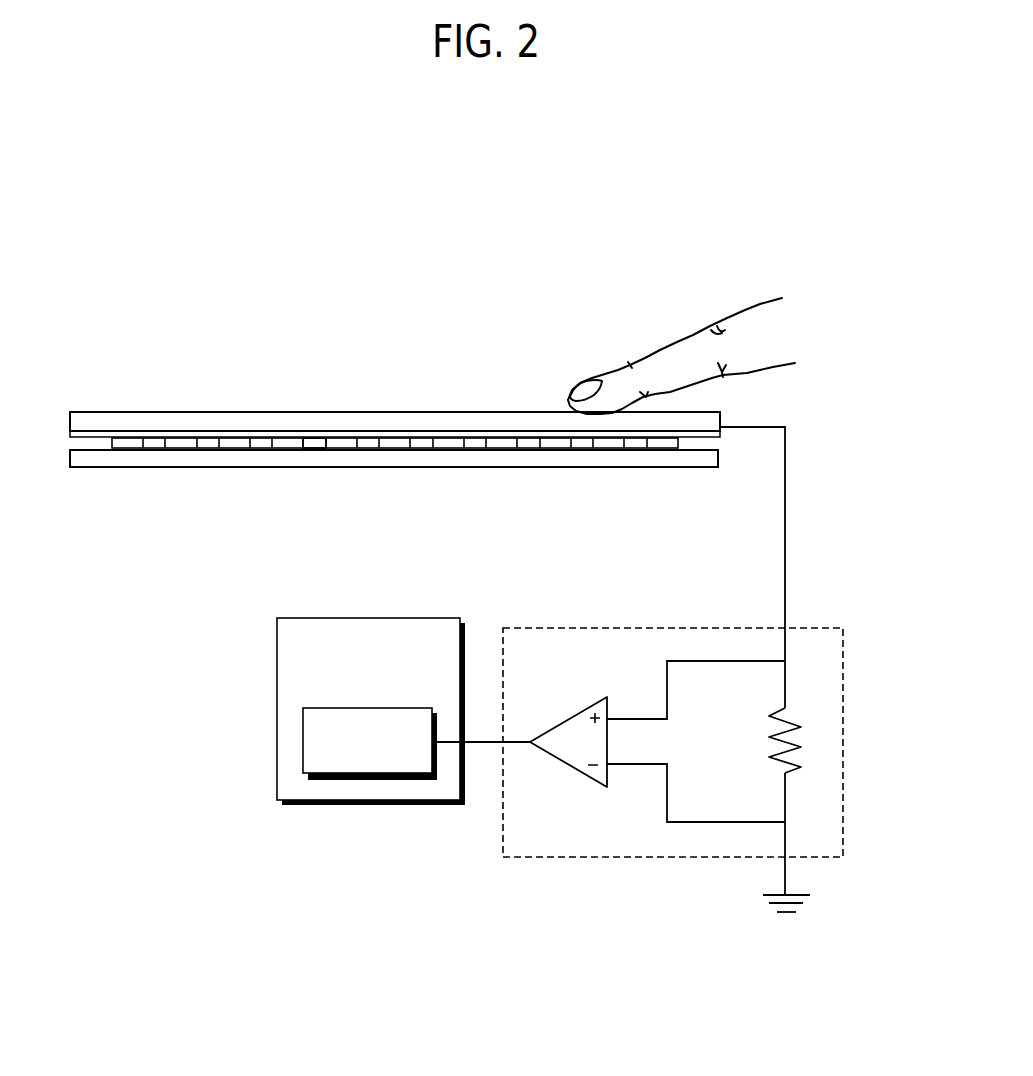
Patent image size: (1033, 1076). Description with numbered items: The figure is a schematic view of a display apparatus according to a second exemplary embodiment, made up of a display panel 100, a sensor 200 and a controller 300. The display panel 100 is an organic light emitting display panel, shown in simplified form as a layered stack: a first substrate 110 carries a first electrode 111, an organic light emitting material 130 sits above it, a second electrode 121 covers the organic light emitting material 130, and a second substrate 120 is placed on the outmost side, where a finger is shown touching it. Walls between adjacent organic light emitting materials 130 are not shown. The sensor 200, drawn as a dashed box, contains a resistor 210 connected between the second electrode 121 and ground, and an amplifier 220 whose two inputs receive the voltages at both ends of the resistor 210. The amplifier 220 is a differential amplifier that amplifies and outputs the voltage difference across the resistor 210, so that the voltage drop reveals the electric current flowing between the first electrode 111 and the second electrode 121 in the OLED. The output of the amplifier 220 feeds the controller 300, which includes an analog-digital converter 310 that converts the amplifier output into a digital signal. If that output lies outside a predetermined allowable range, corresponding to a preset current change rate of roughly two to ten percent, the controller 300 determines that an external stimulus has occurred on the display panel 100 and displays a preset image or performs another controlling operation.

The display panel 100 is at (92, 386).
The first substrate 110 is at (349, 467).
The first electrode 111 is at (125, 450).
The second substrate 120 is at (440, 416).
The second electrode 121 is at (308, 438).
The organic light emitting material 130 is at (181, 438).
The sensor 200 is at (716, 778).
The resistor 210 is at (798, 737).
The amplifier 220 is at (578, 770).
The controller 300 is at (371, 746).
The analog-digital converter 310 is at (397, 780).